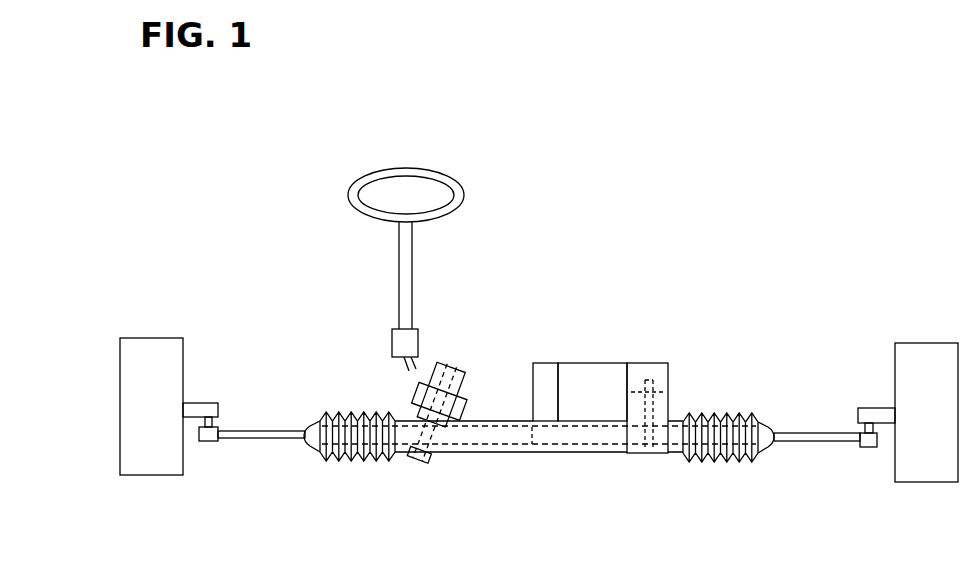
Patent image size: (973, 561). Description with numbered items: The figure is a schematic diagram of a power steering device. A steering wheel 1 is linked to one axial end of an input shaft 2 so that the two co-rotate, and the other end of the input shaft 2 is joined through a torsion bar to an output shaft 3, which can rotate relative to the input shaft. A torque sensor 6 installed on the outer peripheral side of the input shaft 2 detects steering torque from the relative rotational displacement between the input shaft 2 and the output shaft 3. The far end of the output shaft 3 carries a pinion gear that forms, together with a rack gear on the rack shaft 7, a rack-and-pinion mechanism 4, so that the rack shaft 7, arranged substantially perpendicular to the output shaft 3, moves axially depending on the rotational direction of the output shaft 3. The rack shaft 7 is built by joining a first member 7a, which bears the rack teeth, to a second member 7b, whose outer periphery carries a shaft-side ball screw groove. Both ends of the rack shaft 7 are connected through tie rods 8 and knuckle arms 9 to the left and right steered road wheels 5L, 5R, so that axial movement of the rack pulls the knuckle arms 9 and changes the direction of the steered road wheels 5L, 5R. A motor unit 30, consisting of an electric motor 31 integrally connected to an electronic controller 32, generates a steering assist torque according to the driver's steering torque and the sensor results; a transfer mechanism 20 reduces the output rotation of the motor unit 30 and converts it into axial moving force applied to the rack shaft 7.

The steering wheel 1 is at (428, 167).
The input shaft 2 is at (406, 249).
The output shaft 3 is at (438, 455).
The rack-and-pinion mechanism 4 is at (444, 460).
The steered road wheel 5R is at (143, 357).
The steered road wheel 5L is at (935, 352).
The torque sensor 6 is at (425, 363).
The rack shaft 7 is at (539, 493).
The first member 7a is at (497, 437).
The second member 7b is at (592, 437).
The tie rod 8 is at (248, 440).
The knuckle arm 9 is at (200, 403).
The transfer mechanism 20 is at (665, 363).
The motor unit 30 is at (585, 322).
The electric motor 31 is at (545, 267).
The electronic controller 32 is at (545, 363).